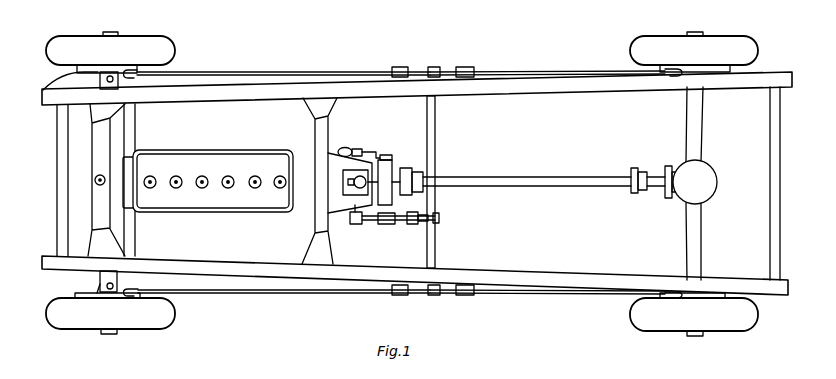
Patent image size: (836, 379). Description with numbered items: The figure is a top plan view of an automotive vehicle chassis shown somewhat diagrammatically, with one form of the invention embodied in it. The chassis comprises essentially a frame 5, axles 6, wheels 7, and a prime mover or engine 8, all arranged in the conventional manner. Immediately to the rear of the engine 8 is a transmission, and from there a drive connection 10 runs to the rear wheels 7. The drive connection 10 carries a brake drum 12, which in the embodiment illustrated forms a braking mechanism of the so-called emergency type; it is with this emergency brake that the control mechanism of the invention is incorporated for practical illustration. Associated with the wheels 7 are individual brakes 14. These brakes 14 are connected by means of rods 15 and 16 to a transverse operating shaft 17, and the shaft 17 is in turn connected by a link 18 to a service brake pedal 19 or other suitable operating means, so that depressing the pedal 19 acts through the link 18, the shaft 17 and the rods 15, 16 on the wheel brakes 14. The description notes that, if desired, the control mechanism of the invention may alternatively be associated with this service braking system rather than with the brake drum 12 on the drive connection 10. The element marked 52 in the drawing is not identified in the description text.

The frame 5 is at (470, 271).
The axles 6 is at (100, 284).
The wheels 7 is at (138, 325).
The prime mover or engine 8 is at (197, 163).
The drive connection 10 is at (452, 178).
The brake drum 12 is at (394, 166).
The individual brakes 14 is at (43, 90).
The rod 15 is at (291, 72).
The rod 16 is at (540, 71).
The transverse operating shaft 17 is at (437, 122).
The link 18 is at (410, 226).
The service brake pedal 19 is at (374, 226).
The control valve 52 is at (343, 149).